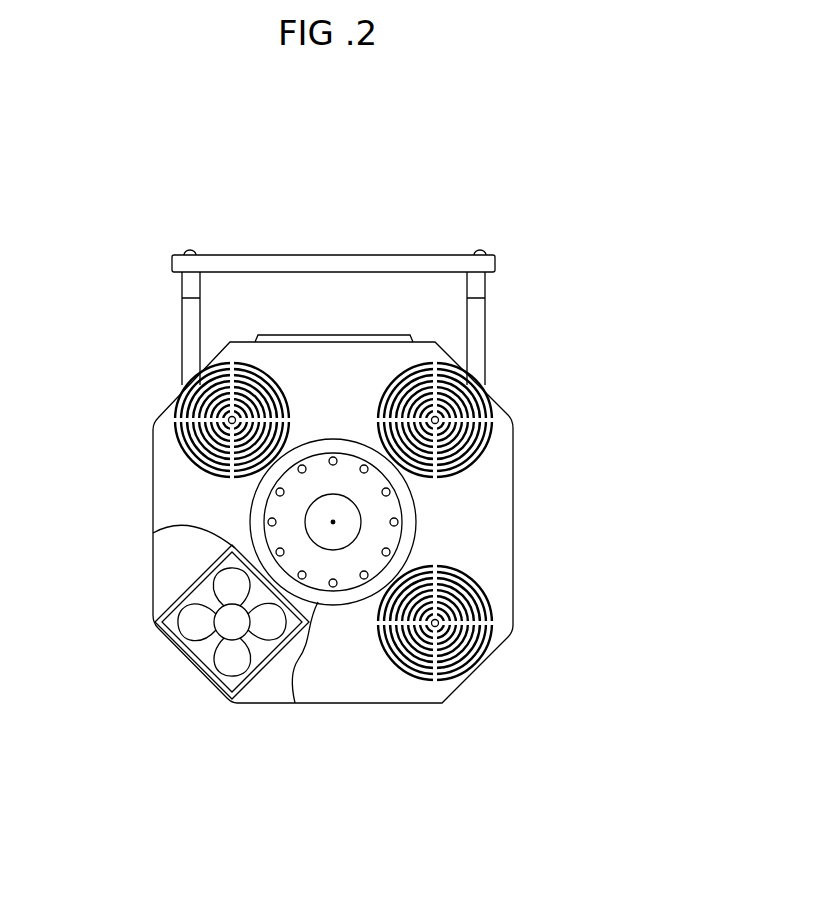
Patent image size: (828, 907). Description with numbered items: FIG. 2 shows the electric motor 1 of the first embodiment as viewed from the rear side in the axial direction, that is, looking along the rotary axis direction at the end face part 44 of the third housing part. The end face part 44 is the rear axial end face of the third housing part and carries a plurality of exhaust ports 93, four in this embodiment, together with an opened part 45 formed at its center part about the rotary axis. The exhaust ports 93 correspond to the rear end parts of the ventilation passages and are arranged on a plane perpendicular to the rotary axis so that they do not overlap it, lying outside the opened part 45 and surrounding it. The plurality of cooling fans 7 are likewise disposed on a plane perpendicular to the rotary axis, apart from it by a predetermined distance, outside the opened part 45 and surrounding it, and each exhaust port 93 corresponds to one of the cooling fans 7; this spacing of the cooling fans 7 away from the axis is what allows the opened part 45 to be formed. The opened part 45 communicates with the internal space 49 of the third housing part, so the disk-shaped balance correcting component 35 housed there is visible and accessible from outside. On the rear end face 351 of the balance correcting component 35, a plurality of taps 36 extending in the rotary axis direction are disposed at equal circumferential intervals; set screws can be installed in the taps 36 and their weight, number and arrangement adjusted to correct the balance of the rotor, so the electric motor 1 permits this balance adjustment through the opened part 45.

The electric motor 1 is at (473, 149).
The cooling fan 7 is at (185, 662).
The balance correcting component 35 is at (328, 597).
The tap 36 is at (405, 563).
The end face part 44 is at (513, 507).
The opened part 45 is at (360, 598).
The internal space 49 is at (345, 600).
The exhaust port 93 is at (485, 386).
The end face 351 is at (484, 592).